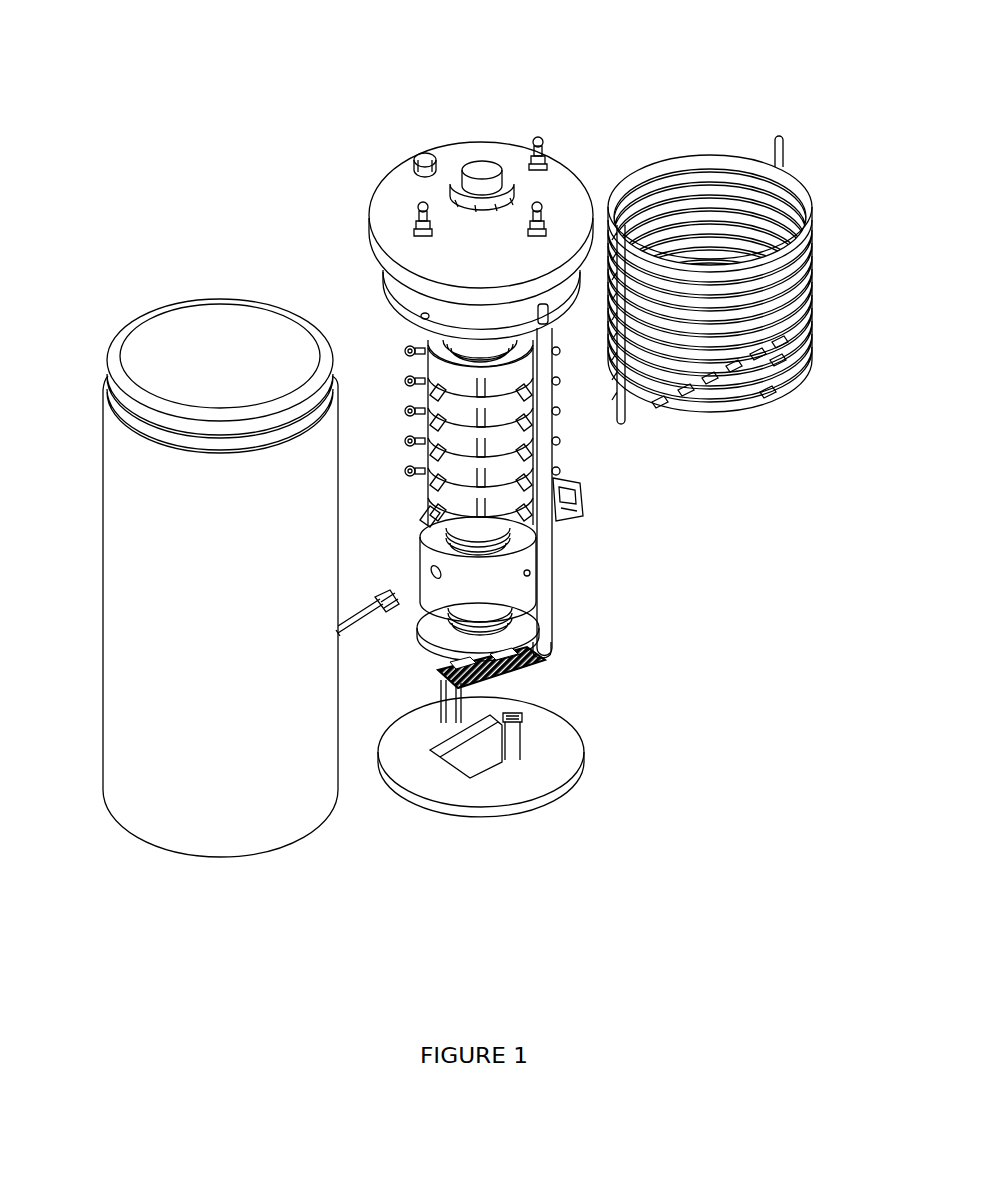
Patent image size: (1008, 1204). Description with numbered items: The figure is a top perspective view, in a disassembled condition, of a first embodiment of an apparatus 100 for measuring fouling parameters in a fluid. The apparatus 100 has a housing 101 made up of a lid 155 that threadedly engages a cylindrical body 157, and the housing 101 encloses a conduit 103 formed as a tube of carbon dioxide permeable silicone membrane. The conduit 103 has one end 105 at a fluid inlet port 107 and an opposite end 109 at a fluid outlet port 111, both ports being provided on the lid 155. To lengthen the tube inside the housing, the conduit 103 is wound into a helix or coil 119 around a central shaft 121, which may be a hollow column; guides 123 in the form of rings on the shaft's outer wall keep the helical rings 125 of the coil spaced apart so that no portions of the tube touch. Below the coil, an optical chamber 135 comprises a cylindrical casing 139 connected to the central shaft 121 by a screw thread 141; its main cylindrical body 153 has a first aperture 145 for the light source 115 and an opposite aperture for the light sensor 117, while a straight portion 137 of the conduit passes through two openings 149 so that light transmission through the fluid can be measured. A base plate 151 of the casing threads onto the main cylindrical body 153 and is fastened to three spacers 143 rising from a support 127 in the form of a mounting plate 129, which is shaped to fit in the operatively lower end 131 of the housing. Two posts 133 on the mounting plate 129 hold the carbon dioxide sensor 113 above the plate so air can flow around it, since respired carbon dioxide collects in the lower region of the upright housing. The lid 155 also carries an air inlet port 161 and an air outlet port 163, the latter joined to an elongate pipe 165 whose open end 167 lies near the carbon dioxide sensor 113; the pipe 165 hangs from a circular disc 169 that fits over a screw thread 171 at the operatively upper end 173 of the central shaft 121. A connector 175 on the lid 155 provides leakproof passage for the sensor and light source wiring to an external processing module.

The apparatus 100 is at (192, 58).
The housing 101 is at (363, 200).
The conduit 103 is at (681, 157).
The one end of the conduit 105 is at (782, 138).
The fluid inlet port 107 is at (534, 138).
The opposite end of the conduit 109 is at (620, 225).
The fluid outlet port 111 is at (418, 203).
The carbon dioxide sensor 113 is at (529, 673).
The light source 115 is at (389, 591).
The light sensor 117 is at (586, 499).
The helix or coil 119 is at (818, 212).
The central shaft 121 is at (497, 442).
The guides 123 is at (404, 440).
The helical rings 125 is at (773, 378).
The support 127 is at (590, 764).
The mounting plate 129 is at (515, 797).
The operatively lower end of the housing 131 is at (160, 860).
The posts 133 is at (492, 722).
The optical chamber 135 is at (504, 563).
The straight portion of the conduit 137 is at (676, 393).
The cylindrical casing 139 is at (534, 589).
The screw thread 141 is at (426, 508).
The spacers 143 is at (530, 683).
The first aperture 145 is at (433, 578).
The openings 149 is at (531, 573).
The base plate 151 is at (498, 642).
The main cylindrical body 153 is at (458, 594).
The lid 155 is at (388, 230).
The cylindrical body 157 is at (130, 488).
The air inlet port 161 is at (421, 153).
The air outlet port 163 is at (541, 208).
The elongate pipe 165 is at (545, 404).
The open end of the pipe 167 is at (546, 655).
The circular disc 169 is at (395, 296).
The screw thread 171 is at (549, 330).
The operatively upper end of the central shaft 173 is at (493, 362).
The connector 175 is at (467, 165).